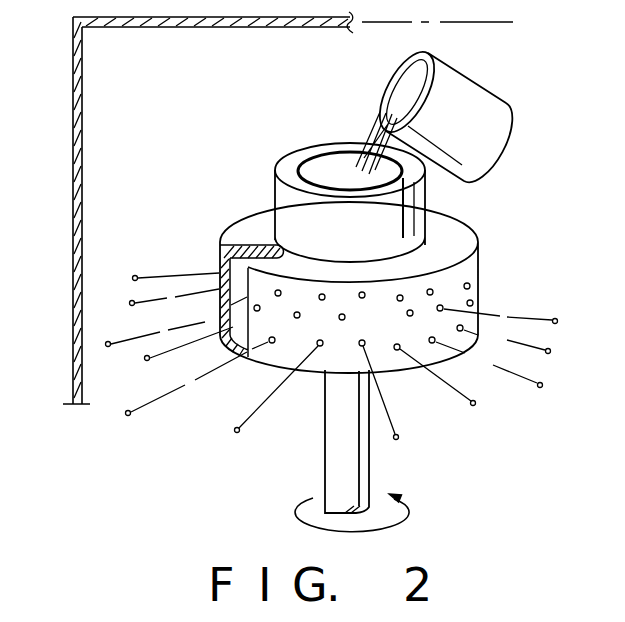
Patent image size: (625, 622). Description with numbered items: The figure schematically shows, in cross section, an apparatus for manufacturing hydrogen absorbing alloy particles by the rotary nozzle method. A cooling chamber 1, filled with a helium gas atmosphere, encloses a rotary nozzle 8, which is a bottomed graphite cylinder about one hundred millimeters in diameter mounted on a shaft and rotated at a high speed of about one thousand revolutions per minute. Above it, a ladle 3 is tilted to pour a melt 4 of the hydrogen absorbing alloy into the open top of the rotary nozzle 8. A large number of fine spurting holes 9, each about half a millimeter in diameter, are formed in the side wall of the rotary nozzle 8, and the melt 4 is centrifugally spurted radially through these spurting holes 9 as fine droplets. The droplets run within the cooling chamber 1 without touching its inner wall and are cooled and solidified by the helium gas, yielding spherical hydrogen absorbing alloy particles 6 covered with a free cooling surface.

The cooling chamber 1 is at (72, 100).
The ladle 3 is at (487, 91).
The melt of hydrogen absorbing alloy 4 is at (372, 136).
The hydrogen absorbing alloy particles 6 is at (476, 404).
The rotary nozzle 8 is at (480, 216).
The spurting holes 9 is at (474, 303).